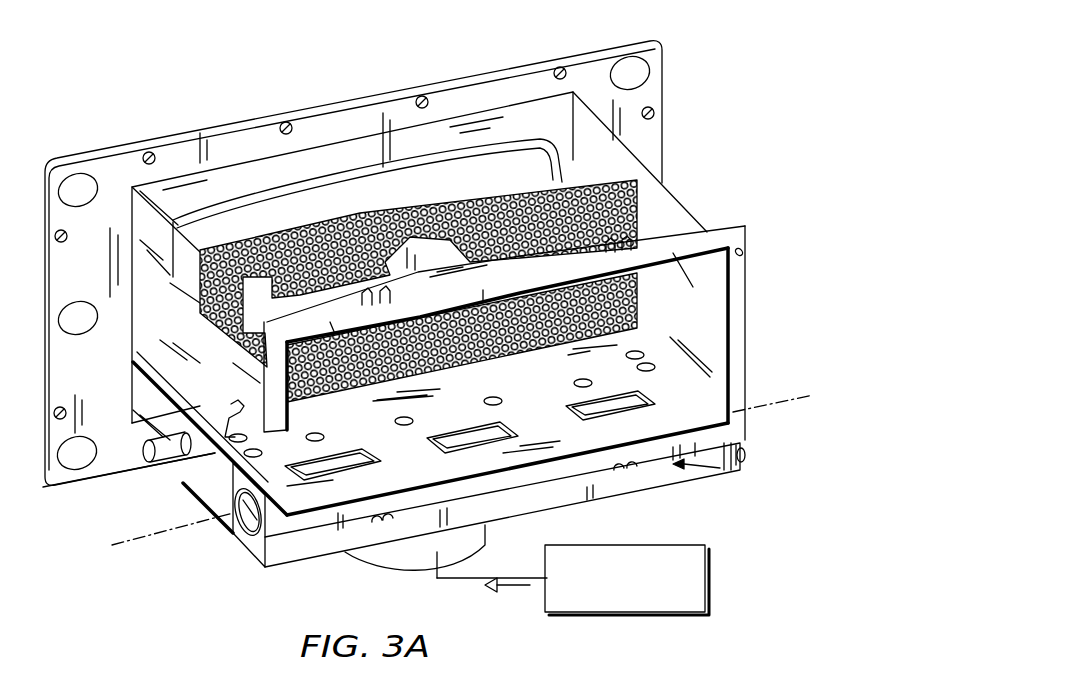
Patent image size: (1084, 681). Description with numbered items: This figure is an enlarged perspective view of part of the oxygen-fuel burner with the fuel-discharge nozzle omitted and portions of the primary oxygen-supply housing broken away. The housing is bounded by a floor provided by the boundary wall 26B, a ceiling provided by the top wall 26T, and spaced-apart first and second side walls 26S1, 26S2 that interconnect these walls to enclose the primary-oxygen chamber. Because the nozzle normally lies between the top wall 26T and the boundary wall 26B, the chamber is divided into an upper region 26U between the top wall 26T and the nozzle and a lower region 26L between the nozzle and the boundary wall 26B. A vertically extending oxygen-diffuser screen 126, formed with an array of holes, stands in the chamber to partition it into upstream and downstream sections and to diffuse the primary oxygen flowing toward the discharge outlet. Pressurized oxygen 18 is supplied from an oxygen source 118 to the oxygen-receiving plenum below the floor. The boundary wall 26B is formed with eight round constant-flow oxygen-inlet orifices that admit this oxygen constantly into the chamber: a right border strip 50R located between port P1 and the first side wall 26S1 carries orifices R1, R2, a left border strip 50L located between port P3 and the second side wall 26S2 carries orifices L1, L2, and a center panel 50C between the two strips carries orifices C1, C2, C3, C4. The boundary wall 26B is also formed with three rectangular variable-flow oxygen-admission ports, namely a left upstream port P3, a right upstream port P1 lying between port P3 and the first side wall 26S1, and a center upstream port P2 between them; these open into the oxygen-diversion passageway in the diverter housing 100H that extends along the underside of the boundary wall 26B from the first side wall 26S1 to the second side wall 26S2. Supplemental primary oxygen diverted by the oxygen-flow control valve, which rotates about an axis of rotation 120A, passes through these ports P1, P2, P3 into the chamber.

The top wall 26T is at (512, 105).
The oxygen-diffuser screen 126 is at (345, 205).
The upper region 26U is at (707, 277).
The first side wall 26S1 is at (700, 326).
The second side wall 26S2 is at (185, 358).
The boundary wall 26B is at (680, 400).
The lower region 26L is at (411, 468).
The constant-flow oxygen-inlet orifice R1 is at (654, 366).
The constant-flow oxygen-inlet orifice R2 is at (636, 350).
The constant-flow oxygen-inlet orifice L1 is at (246, 455).
The constant-flow oxygen-inlet orifice L2 is at (233, 436).
The constant-flow oxygen-inlet orifice C1 is at (582, 379).
The constant-flow oxygen-inlet orifice C2 is at (492, 397).
The constant-flow oxygen-inlet orifice C3 is at (407, 418).
The constant-flow oxygen-inlet orifice C4 is at (316, 433).
The right upstream oxygen-admission port P1 is at (620, 432).
The center upstream oxygen-admission port P2 is at (477, 462).
The left upstream oxygen-admission port P3 is at (348, 488).
The left border strip 50L is at (303, 512).
The right border strip 50R is at (746, 455).
The center panel 50C is at (455, 470).
The diverter housing 100H is at (720, 468).
The oxygen source 118 is at (707, 580).
The pressurized oxygen 18 is at (528, 592).
The axis of rotation 120A is at (172, 535).